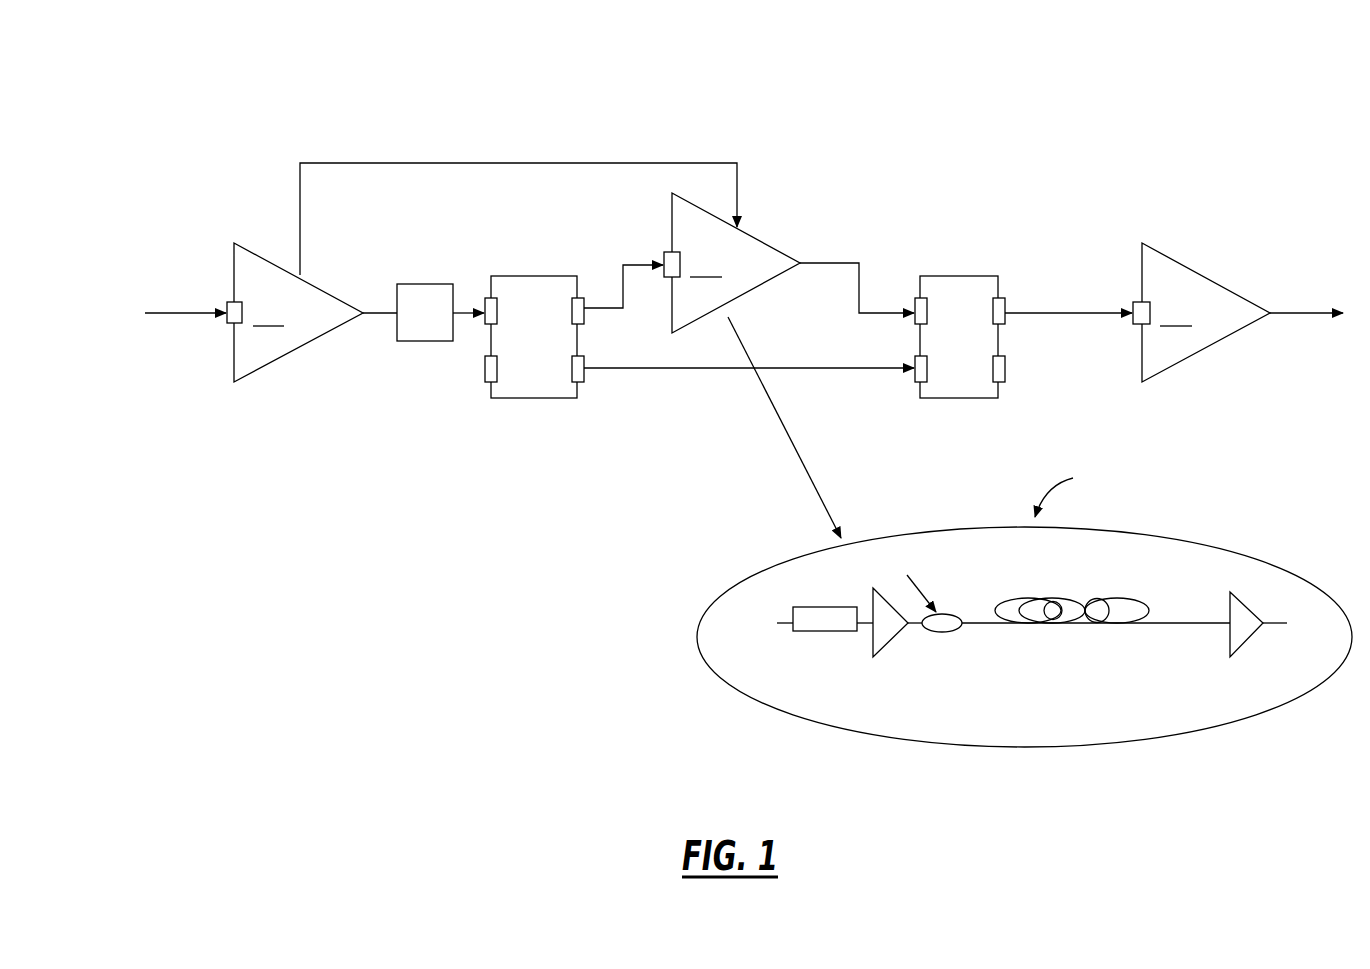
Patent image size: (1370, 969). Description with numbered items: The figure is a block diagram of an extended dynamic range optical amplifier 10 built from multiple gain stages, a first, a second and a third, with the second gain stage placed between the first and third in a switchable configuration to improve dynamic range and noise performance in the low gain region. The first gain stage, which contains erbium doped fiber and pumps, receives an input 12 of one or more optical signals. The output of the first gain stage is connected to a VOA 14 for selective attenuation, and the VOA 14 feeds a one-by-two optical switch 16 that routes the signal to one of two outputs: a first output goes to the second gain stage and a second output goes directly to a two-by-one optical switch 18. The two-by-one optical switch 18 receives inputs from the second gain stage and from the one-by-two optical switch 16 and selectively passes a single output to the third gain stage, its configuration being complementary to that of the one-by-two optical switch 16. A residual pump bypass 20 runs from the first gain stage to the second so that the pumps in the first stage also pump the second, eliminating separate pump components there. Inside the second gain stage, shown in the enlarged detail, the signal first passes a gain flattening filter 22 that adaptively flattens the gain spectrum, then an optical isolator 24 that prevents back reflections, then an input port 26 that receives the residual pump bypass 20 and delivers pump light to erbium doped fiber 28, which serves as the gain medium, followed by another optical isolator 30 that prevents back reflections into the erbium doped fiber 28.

The extended dynamic range optical amplifier 10 is at (777, 68).
The input 12 is at (188, 227).
The VOA 14 is at (435, 284).
The 1×2 optical switch 16 is at (538, 276).
The 2×1 optical switch 18 is at (968, 276).
The residual pump bypass 20 is at (545, 105).
The gain flattening filter 22 is at (833, 632).
The optical isolator 24 is at (872, 638).
The input port 26 is at (940, 632).
The erbium doped fiber 28 is at (1053, 585).
The optical isolator 30 is at (1230, 642).